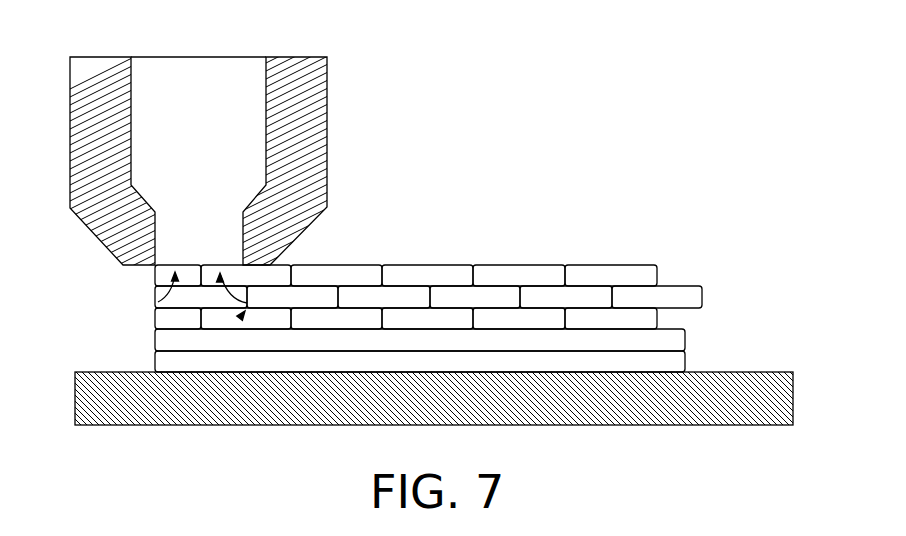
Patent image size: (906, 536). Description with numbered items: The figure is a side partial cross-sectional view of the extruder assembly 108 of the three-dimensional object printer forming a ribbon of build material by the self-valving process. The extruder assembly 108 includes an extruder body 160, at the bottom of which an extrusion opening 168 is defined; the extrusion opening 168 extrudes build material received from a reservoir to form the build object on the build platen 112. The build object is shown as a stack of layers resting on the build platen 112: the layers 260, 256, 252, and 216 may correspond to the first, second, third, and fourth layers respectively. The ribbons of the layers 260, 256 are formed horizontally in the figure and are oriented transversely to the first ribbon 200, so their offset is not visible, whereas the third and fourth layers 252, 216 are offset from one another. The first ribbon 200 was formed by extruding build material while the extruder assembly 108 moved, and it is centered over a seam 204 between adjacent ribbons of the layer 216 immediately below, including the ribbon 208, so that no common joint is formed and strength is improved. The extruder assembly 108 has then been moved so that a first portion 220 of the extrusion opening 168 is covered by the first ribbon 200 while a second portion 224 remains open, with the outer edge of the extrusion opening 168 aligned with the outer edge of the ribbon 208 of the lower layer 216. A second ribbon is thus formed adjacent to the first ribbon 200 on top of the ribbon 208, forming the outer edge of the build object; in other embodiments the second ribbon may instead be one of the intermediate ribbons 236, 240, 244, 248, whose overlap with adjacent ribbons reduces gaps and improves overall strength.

The extruder assembly 108 is at (264, 200).
The extruder body 160 is at (318, 93).
The extrusion opening 168 is at (203, 253).
The first ribbon 200 is at (409, 284).
The layer 216 is at (409, 257).
The first portion of the extrusion opening 220 is at (293, 264).
The second portion of the extrusion opening 224 is at (158, 302).
The ribbon 236 is at (372, 272).
The ribbon 240 is at (433, 272).
The ribbon 244 is at (520, 272).
The ribbon 248 is at (605, 272).
The layer 252 is at (436, 310).
The ribbon 208 is at (183, 298).
The layer 256 is at (431, 337).
The seam 204 is at (245, 311).
The layer 260 is at (721, 358).
The build platen 112 is at (141, 418).